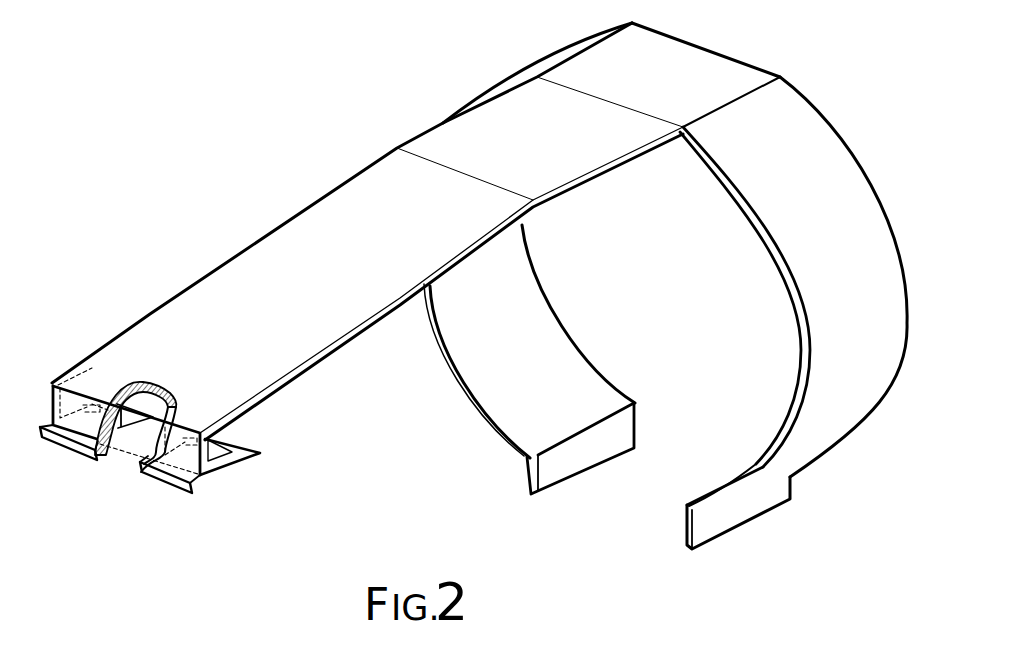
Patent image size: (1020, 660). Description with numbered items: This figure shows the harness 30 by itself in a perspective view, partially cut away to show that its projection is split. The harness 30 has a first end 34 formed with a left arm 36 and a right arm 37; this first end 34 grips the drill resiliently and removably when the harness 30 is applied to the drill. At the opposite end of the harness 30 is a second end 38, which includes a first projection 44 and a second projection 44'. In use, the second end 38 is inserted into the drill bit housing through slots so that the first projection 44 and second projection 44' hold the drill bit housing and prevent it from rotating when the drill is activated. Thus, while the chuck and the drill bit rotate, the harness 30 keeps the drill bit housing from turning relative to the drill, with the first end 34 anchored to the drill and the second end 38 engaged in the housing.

The harness 30 is at (304, 197).
The first end 34 is at (838, 128).
The left arm 36 is at (842, 398).
The right arm 37 is at (548, 370).
The second end 38 is at (63, 383).
The first projection 44 is at (135, 443).
The second projection 44' is at (243, 445).